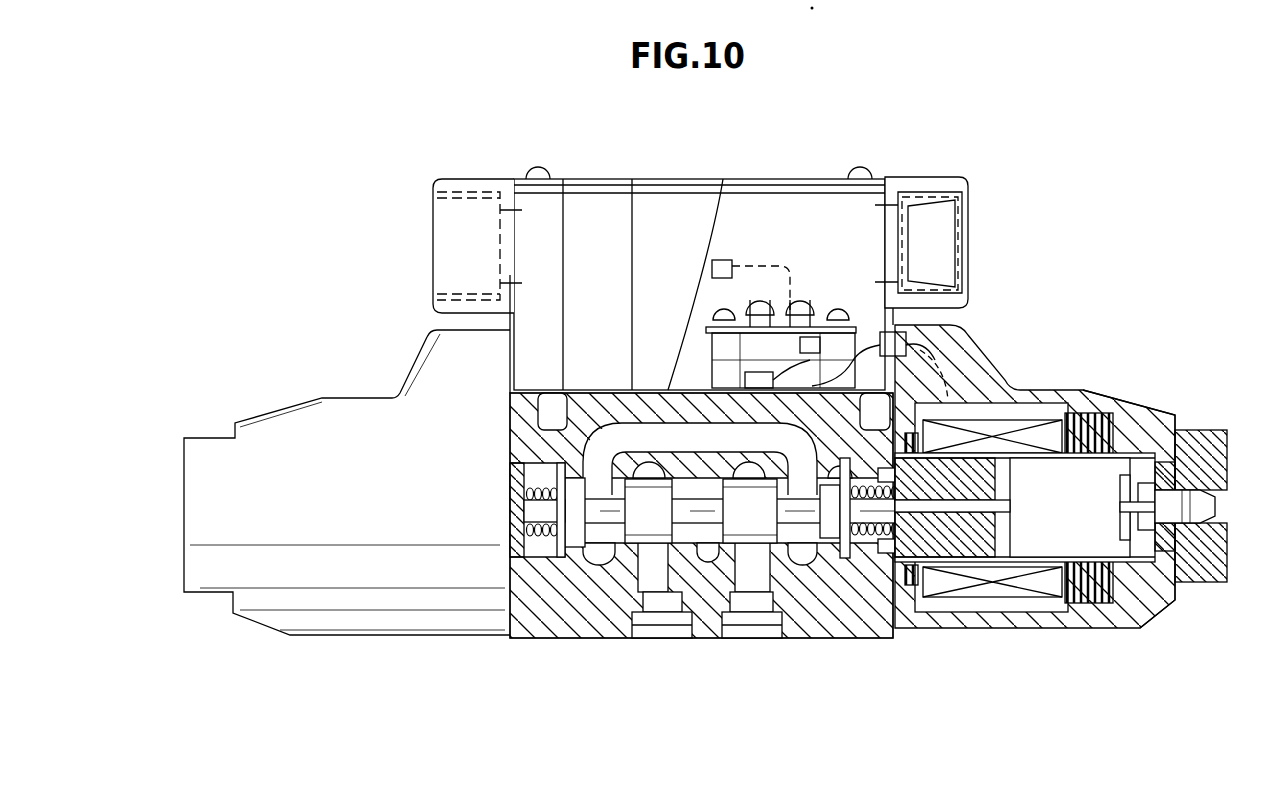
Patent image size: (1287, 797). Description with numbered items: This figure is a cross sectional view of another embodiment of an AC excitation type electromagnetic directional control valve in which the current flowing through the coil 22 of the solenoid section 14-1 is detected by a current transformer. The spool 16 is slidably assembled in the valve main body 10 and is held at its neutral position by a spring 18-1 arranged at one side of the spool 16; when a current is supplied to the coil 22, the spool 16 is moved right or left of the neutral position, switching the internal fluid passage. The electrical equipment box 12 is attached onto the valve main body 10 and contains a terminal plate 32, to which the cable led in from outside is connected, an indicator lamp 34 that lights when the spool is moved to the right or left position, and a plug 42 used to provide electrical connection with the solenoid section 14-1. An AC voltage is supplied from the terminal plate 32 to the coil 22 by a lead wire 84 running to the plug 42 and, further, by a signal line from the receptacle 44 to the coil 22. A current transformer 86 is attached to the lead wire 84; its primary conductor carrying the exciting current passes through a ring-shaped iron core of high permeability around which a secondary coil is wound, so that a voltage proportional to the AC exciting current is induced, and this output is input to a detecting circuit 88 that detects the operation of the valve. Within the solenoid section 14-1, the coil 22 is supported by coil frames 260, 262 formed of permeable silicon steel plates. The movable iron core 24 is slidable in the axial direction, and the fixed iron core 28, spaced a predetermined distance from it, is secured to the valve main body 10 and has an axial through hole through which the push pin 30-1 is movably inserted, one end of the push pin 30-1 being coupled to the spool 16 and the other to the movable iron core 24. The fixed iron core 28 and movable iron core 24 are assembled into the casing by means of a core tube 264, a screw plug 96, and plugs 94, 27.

The valve main body 10 is at (525, 640).
The electrical equipment box 12 is at (659, 175).
The solenoid section 14-1 is at (281, 401).
The spool 16 is at (802, 512).
The spring 18-1 is at (893, 628).
The coil 22 is at (1043, 476).
The movable iron core 24 is at (1118, 600).
The plug 27 is at (1205, 505).
The fixed iron core 28 is at (958, 540).
The push pin 30-1 is at (1090, 530).
The terminal plate 32 is at (752, 305).
The indicator lamp 34 is at (712, 265).
The plug 42 is at (880, 338).
The receptacle 44 is at (906, 345).
The lead wire 84 is at (925, 370).
The current transformer 86 is at (830, 336).
The detecting circuit 88 is at (745, 378).
The plug 94 is at (1228, 545).
The screw plug 96 is at (1228, 447).
The coil frame 260 is at (1100, 418).
The coil frame 262 is at (958, 425).
The core tube 264 is at (942, 630).